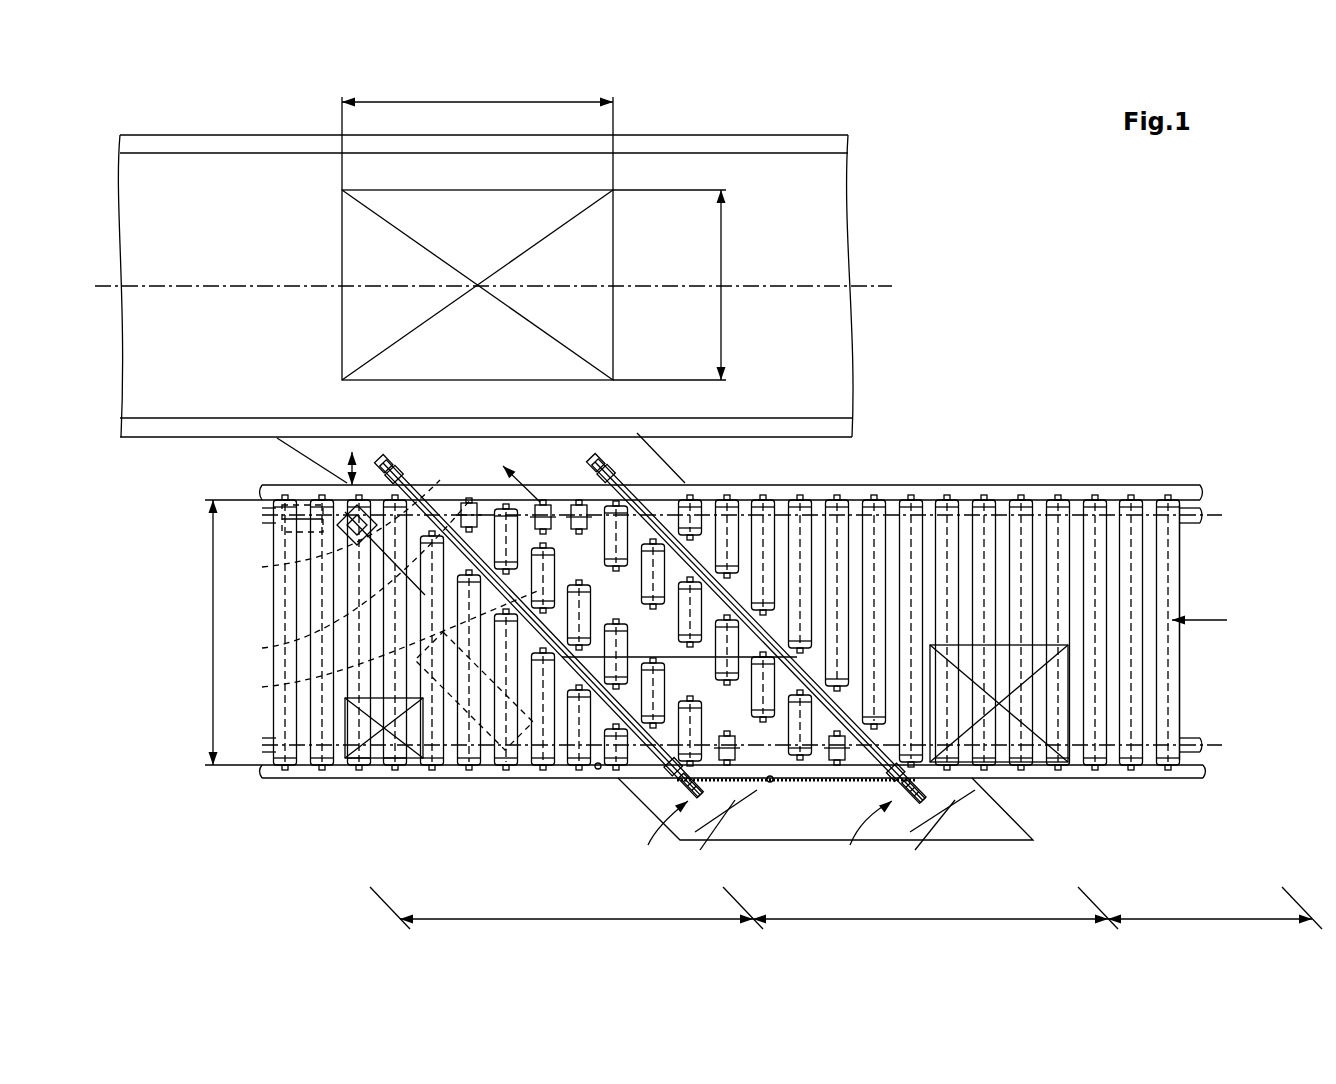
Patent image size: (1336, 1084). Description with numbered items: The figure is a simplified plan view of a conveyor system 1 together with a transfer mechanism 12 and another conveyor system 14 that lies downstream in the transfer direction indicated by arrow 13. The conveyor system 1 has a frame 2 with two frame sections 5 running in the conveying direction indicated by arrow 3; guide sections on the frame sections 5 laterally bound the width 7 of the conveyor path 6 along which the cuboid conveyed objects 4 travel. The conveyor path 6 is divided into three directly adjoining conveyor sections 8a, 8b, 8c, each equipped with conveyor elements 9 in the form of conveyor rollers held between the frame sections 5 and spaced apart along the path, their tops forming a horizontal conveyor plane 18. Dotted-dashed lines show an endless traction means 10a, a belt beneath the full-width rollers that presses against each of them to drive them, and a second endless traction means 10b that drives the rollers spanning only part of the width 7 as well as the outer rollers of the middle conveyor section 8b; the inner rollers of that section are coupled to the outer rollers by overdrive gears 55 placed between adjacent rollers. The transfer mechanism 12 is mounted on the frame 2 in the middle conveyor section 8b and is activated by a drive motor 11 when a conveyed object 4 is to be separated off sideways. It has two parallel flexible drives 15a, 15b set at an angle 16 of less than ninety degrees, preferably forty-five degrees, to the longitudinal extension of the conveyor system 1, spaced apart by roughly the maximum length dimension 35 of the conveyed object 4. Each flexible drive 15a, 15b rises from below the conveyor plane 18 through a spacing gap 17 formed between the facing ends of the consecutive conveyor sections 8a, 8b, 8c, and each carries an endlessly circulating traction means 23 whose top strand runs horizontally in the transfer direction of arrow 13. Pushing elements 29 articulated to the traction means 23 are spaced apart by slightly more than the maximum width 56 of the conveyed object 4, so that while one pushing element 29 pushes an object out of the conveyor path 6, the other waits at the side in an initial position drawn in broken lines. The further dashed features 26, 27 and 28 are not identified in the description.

The conveyor system 1 is at (739, 632).
The frame 2 is at (1048, 484).
The arrow 3 is at (1212, 614).
The conveyed object 4 is at (600, 250).
The frame section 5 is at (1184, 484).
The conveyor path 6 is at (1196, 556).
The width 7 is at (213, 662).
The conveyor section 8a is at (1232, 916).
The conveyor section 8b is at (955, 916).
The conveyor section 8c is at (625, 915).
The conveyor element 9 is at (278, 616).
The traction means 10a is at (1212, 743).
The traction means 10b is at (1212, 513).
The drive motor 11 is at (492, 756).
The transfer mechanism 12 is at (800, 578).
The arrow 13 is at (531, 498).
The other conveyor system 14 is at (876, 163).
The flexible drive 15a is at (650, 833).
The flexible drive 15b is at (854, 838).
The angle 16 is at (347, 459).
The spacing gap 17 is at (735, 822).
The conveyor plane 18 is at (1172, 640).
The traction means 23 is at (445, 480).
The article path 26 is at (349, 580).
The article path 27 is at (384, 645).
The article path 28 is at (334, 529).
The pushing element 29 is at (598, 769).
The maximum length dimension 35 is at (430, 101).
The overdrive gear 55 is at (500, 492).
The maximum width 56 is at (724, 266).